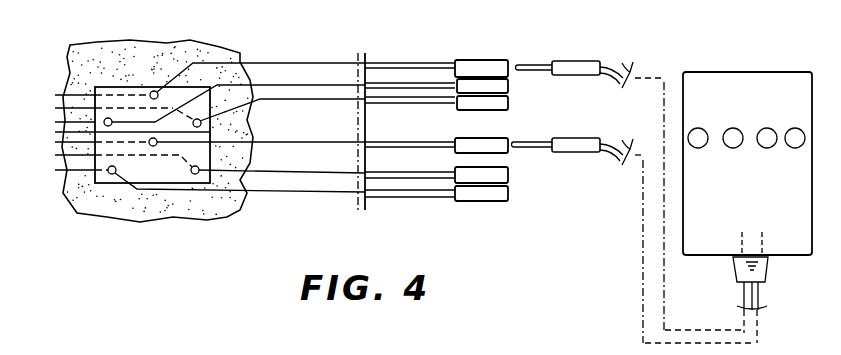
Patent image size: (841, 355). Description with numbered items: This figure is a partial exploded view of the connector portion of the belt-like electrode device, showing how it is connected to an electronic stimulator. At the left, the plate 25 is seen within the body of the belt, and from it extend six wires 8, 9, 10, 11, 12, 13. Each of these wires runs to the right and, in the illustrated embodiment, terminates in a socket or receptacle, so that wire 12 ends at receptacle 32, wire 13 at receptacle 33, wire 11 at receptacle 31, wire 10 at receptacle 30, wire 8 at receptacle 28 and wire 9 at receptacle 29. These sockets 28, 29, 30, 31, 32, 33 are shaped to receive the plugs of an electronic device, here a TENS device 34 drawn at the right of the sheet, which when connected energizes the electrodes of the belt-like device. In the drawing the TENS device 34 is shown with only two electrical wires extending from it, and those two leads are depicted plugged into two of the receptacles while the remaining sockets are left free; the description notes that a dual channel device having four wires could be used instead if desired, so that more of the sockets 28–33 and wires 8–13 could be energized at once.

The wire 8 is at (275, 173).
The wire 9 is at (290, 192).
The wire 10 is at (320, 142).
The wire 11 is at (317, 98).
The wire 12 is at (274, 62).
The wire 13 is at (290, 82).
The plate 25 is at (113, 87).
The socket or receptacle 28 is at (508, 177).
The socket or receptacle 29 is at (483, 202).
The socket or receptacle 30 is at (460, 142).
The socket or receptacle 31 is at (510, 103).
The socket or receptacle 32 is at (487, 65).
The socket or receptacle 33 is at (460, 85).
The TENS device 34 is at (712, 80).